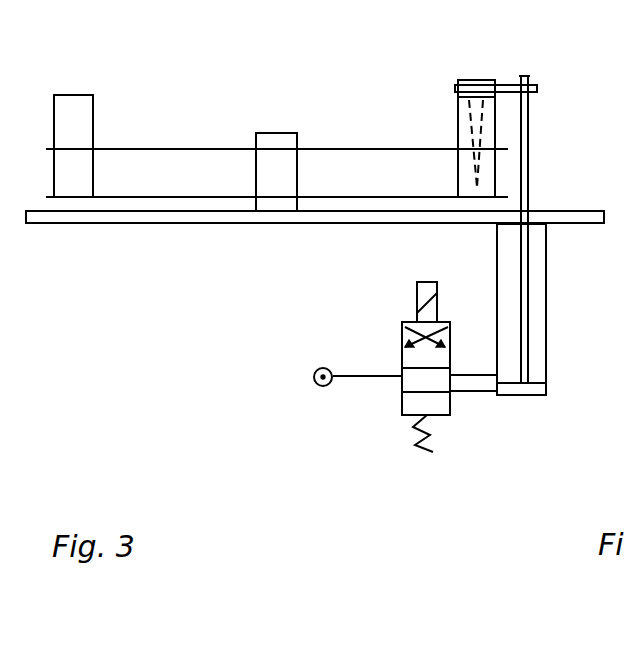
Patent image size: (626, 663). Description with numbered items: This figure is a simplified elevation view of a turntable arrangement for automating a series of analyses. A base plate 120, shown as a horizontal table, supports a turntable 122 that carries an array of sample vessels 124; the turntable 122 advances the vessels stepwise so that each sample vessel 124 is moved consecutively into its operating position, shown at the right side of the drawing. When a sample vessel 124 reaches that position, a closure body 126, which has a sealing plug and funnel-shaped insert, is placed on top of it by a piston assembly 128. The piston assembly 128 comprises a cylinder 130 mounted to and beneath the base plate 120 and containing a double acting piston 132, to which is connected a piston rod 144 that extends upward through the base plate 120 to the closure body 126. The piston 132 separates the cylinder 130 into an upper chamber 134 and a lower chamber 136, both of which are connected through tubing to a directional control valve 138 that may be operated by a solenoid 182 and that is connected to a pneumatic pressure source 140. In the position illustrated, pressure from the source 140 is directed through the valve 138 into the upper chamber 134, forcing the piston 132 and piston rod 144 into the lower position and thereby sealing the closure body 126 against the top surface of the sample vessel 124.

The base plate 120 is at (588, 211).
The turntable 122 is at (347, 149).
The sample vessels 124 is at (84, 113).
The closure body 126 is at (478, 85).
The piston assembly 128 is at (547, 268).
The cylinder 130 is at (497, 253).
The double acting piston 132 is at (540, 376).
The upper chamber 134 is at (540, 242).
The lower chamber 136 is at (523, 396).
The directional control valve 138 is at (403, 350).
The pneumatic pressure source 140 is at (315, 374).
The piston rod 144 is at (528, 124).
The solenoid 182 is at (417, 290).